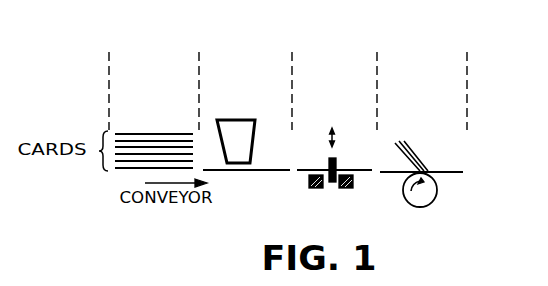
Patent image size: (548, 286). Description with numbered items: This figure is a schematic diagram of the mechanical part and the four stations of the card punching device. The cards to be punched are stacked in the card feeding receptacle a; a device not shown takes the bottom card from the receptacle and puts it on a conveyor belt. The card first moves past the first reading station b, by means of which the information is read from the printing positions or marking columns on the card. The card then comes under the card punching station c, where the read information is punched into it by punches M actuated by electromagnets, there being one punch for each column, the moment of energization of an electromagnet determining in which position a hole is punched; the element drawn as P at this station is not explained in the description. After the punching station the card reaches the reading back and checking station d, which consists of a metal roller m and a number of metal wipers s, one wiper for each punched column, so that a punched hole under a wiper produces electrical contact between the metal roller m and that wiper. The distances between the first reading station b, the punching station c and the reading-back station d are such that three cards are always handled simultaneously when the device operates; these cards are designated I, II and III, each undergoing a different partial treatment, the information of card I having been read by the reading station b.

The card feeding receptacle a is at (147, 68).
The first reading station b is at (242, 68).
The card punching station c is at (332, 68).
The reading back and checking station d is at (429, 68).
The photocell reading hopper P is at (243, 135).
The punches M is at (339, 167).
The card II is at (355, 173).
The card III is at (255, 171).
The metal wipers s is at (408, 148).
The card I is at (446, 173).
The metal roller m is at (427, 204).